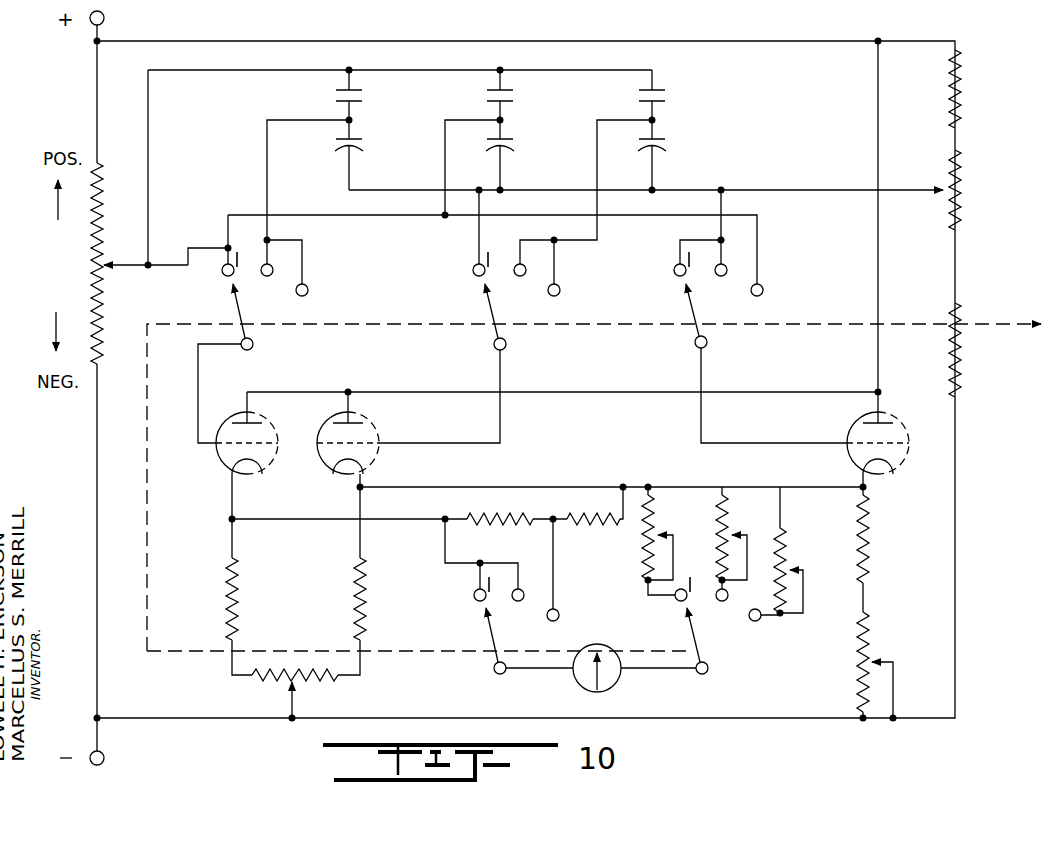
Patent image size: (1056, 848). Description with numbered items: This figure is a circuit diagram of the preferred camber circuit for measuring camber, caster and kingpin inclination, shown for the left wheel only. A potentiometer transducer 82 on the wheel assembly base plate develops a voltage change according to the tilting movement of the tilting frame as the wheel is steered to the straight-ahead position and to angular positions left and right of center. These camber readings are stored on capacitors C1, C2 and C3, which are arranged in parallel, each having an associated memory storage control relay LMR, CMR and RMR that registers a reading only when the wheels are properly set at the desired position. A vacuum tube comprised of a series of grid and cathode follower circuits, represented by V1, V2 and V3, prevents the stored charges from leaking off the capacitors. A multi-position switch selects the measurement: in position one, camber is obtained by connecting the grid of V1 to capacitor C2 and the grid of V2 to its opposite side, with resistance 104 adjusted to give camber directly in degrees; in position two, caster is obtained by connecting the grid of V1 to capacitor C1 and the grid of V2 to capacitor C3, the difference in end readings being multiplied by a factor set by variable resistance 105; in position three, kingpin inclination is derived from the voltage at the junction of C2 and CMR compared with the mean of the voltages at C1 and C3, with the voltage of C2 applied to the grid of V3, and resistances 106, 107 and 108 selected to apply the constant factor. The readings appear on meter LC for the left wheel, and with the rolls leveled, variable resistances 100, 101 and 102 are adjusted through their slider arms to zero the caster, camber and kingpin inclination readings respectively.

The transducer 82 is at (97, 265).
The variable resistance 100 is at (994, 223).
The variable resistance 101 is at (316, 680).
The variable resistance 102 is at (872, 640).
The resistance 104 is at (659, 512).
The variable resistance 105 is at (731, 512).
The resistance 106 is at (497, 513).
The resistance 107 is at (582, 513).
The resistance 108 is at (786, 555).
The vacuum tube V1 is at (220, 459).
The vacuum tube V2 is at (378, 432).
The vacuum tube V3 is at (850, 428).
The meter LC is at (613, 689).
The capacitor C1 is at (329, 147).
The capacitor C2 is at (488, 147).
The capacitor C3 is at (640, 147).
The memory storage control relay LMR is at (366, 97).
The memory storage control relay CMR is at (516, 97).
The memory storage control relay RMR is at (668, 97).